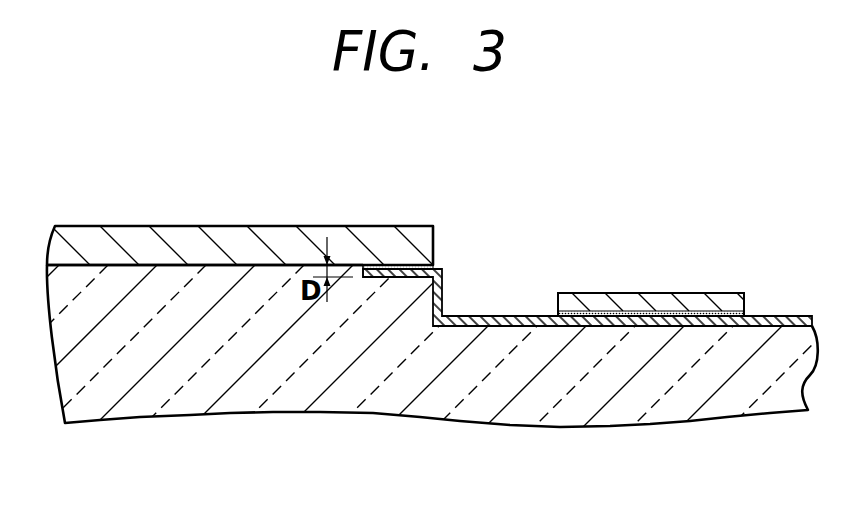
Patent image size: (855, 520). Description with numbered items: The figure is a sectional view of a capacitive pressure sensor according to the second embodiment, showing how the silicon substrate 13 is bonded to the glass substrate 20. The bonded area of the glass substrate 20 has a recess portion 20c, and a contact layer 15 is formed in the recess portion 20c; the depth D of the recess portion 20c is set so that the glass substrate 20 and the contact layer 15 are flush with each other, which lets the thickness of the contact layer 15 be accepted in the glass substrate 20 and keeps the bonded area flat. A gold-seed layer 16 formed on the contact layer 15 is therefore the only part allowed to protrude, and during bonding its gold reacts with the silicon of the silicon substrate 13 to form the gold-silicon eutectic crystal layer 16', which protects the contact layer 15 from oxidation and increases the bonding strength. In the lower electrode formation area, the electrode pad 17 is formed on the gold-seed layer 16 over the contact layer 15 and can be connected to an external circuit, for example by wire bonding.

The silicon substrate 13 is at (187, 238).
The contact layer 15 is at (442, 268).
The gold-seed layer 16 is at (660, 266).
The gold-silicon eutectic crystal layer 16' is at (398, 225).
The electrode pad 17 is at (657, 302).
The glass substrate 20 is at (720, 405).
The recess portion 20c is at (352, 265).